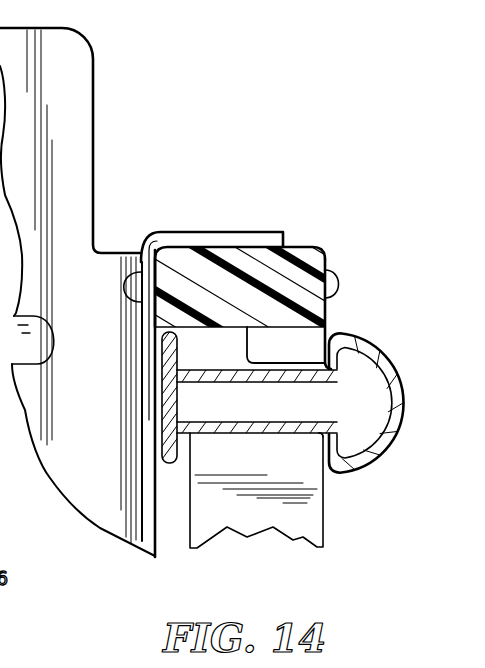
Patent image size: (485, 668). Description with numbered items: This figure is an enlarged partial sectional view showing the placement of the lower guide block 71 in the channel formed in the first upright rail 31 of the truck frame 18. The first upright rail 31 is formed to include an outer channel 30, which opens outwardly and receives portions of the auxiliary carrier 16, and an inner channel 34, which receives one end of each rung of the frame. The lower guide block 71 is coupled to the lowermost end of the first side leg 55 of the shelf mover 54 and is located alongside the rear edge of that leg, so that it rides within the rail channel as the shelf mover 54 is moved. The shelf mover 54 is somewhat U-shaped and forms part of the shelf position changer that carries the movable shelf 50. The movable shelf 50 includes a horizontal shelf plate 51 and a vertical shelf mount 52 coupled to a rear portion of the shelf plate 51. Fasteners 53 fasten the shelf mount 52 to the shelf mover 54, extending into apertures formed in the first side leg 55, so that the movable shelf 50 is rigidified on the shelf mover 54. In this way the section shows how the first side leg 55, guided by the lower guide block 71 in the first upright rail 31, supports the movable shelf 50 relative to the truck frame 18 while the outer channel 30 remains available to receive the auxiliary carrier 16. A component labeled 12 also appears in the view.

The container body 12 is at (340, 485).
The auxiliary carrier 16 is at (320, 233).
The truck frame 18 is at (334, 303).
The outer channel 30 is at (199, 356).
The first upright rail 31 is at (360, 329).
The inner channel 34 is at (226, 448).
The movable shelf 50 is at (80, 524).
The horizontal shelf plate 51 is at (72, 73).
The vertical shelf mount 52 is at (143, 421).
The fasteners 53 is at (136, 292).
The shelf mover 54 is at (333, 267).
The first side leg 55 is at (250, 274).
The lower guide block 71 is at (285, 350).